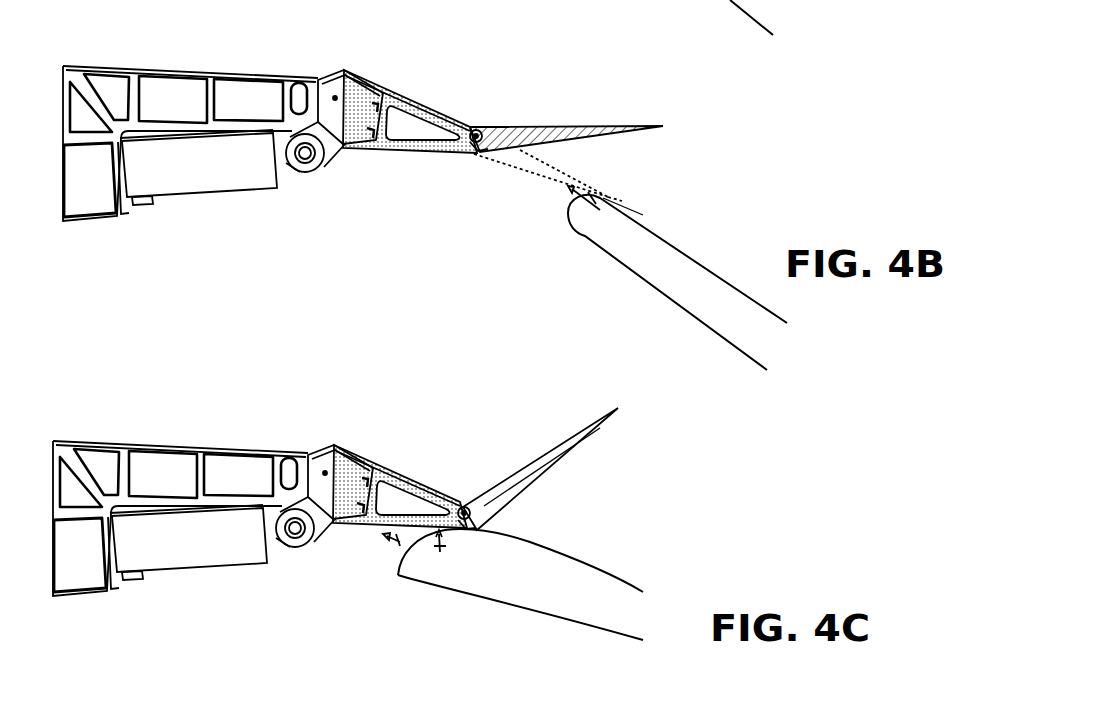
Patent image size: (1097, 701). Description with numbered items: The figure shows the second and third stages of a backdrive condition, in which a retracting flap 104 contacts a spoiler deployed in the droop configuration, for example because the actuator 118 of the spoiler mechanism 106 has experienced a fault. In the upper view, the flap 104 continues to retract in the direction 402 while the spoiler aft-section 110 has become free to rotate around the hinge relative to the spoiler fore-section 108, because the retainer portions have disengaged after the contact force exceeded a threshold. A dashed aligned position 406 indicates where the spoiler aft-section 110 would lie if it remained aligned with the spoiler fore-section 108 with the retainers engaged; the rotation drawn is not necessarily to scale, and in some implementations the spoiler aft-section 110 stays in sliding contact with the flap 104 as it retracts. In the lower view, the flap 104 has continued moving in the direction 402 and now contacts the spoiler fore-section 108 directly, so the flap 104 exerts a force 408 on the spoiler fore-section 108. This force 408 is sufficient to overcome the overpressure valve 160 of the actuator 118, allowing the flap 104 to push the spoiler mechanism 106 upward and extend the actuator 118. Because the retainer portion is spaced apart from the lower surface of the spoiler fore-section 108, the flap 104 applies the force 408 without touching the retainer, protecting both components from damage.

In FIG. 4B, the flap 104 is at (692, 240).
In FIG. 4C, the flap 104 is at (598, 572).
In FIG. 4B, the spoiler mechanism 106 is at (475, 66).
In FIG. 4B, the spoiler fore-section 108 is at (409, 82).
In FIG. 4C, the spoiler fore-section 108 is at (394, 465).
In FIG. 4B, the spoiler aft-section 110 is at (583, 112).
In FIG. 4C, the spoiler aft-section 110 is at (509, 464).
In FIG. 4B, the actuator 118 is at (247, 194).
In FIG. 4C, the actuator 118 is at (194, 560).
In FIG. 4B, the overpressure valve 160 is at (145, 206).
In FIG. 4C, the overpressure valve 160 is at (161, 598).
In FIG. 4B, the direction 402 is at (563, 196).
In FIG. 4C, the direction 402 is at (388, 542).
In FIG. 4B, the aligned position 406 is at (521, 171).
In FIG. 4C, the force 408 is at (432, 550).